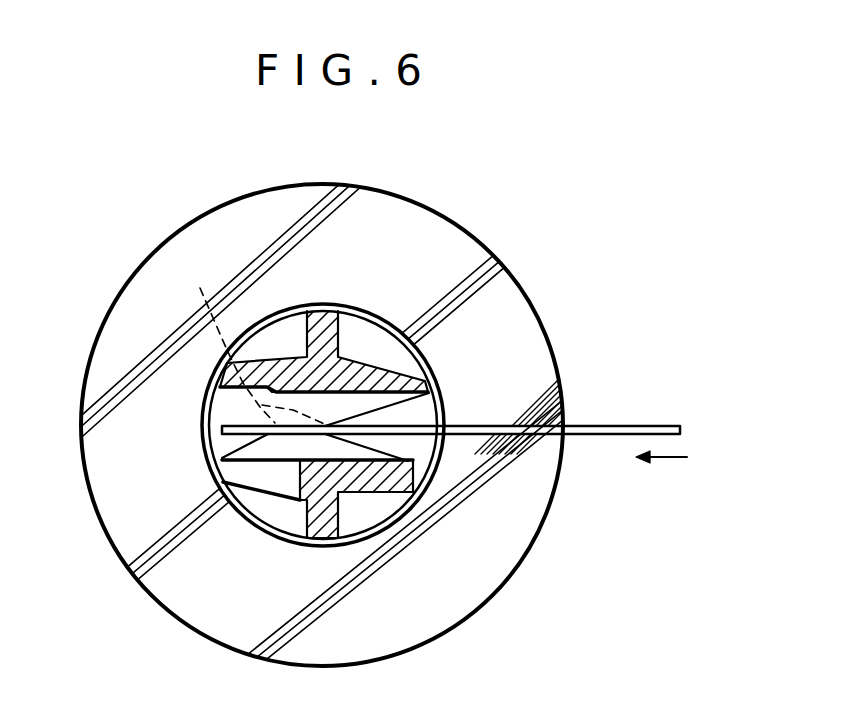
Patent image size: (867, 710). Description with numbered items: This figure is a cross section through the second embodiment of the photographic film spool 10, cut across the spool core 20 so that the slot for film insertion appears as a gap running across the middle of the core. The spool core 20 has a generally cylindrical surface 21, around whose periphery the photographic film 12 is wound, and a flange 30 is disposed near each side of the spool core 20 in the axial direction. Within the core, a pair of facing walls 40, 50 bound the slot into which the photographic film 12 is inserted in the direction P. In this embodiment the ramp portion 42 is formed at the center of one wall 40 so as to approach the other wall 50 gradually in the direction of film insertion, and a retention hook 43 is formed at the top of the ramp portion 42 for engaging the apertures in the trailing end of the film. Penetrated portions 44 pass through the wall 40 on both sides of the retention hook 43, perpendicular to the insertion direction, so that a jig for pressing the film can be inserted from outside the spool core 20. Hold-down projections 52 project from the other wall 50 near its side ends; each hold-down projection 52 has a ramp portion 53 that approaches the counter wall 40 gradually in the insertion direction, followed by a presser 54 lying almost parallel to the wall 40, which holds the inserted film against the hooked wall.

The photographic film spool 10 is at (276, 180).
The photographic film 12 is at (607, 426).
The spool core 20 is at (421, 347).
The cylindrical surface 21 is at (328, 305).
The flange 30 is at (520, 292).
The wall 40 is at (325, 397).
The ramp portion 42 is at (385, 450).
The retention hook 43 is at (250, 340).
The penetrated portion 44 is at (227, 467).
The wall 50 is at (273, 357).
The hold-down projection 52 is at (228, 401).
The ramp portion 53 is at (357, 400).
The presser 54 is at (228, 431).